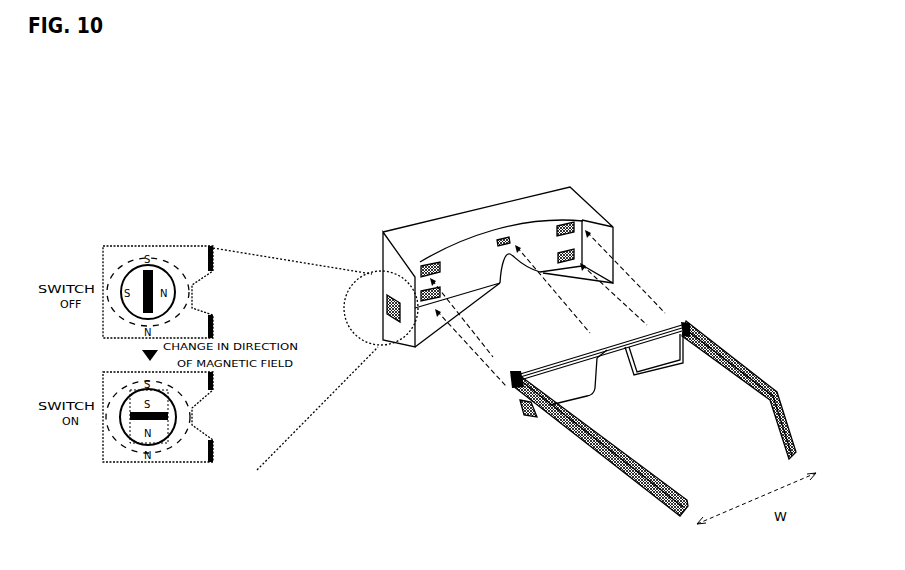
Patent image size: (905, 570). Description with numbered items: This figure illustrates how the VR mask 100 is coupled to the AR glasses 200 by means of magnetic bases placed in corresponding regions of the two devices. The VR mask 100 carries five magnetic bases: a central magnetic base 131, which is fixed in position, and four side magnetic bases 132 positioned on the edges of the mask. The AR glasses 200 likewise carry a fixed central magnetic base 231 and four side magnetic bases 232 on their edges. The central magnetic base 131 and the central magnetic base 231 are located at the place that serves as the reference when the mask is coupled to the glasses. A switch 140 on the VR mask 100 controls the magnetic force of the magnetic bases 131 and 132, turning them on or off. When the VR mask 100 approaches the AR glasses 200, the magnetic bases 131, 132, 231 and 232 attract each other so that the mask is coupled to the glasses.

The VR mask 100 is at (613, 226).
The central magnetic base 131 is at (503, 238).
The side magnetic bases 132 is at (425, 263).
The switch 140 is at (352, 324).
The AR glasses 200 is at (717, 345).
The central magnetic base 231 is at (607, 360).
The side magnetic bases 232 is at (685, 322).